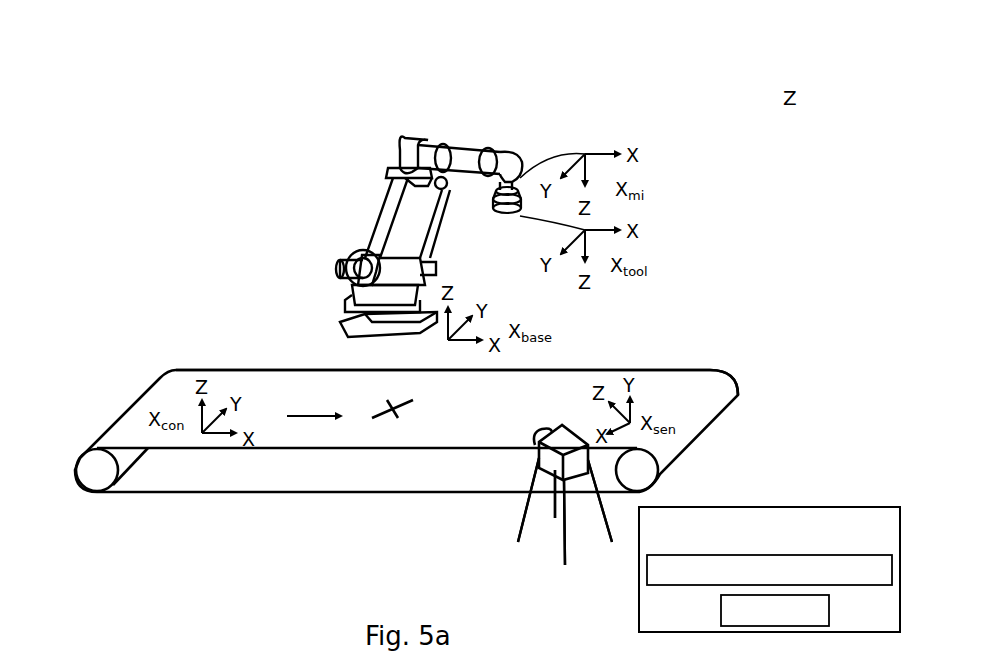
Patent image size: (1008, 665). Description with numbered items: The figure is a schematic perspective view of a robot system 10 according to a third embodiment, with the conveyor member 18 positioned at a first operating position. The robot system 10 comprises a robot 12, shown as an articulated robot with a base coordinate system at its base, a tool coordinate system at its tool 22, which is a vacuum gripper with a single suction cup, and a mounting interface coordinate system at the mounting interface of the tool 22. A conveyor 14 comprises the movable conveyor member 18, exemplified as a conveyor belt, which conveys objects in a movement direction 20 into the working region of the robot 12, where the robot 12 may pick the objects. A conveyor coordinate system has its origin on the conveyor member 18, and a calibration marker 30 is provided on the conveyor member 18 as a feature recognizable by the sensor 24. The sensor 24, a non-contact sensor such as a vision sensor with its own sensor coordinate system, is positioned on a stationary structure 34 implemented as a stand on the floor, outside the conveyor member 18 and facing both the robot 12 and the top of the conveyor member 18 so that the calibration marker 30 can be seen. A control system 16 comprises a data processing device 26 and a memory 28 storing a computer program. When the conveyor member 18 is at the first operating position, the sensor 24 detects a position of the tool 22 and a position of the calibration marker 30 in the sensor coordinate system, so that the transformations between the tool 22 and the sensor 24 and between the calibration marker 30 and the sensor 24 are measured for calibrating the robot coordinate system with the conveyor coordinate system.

The robot system 10 is at (100, 57).
The robot 12 is at (378, 140).
The conveyor 14 is at (88, 389).
The control system 16 is at (780, 507).
The conveyor member 18 is at (672, 382).
The movement direction 20 is at (314, 401).
The tool 22 is at (495, 216).
The sensor 24 is at (562, 437).
The data processing device 26 is at (769, 570).
The memory 28 is at (775, 610).
The calibration marker 30 is at (400, 409).
The stationary structure 34 is at (525, 505).